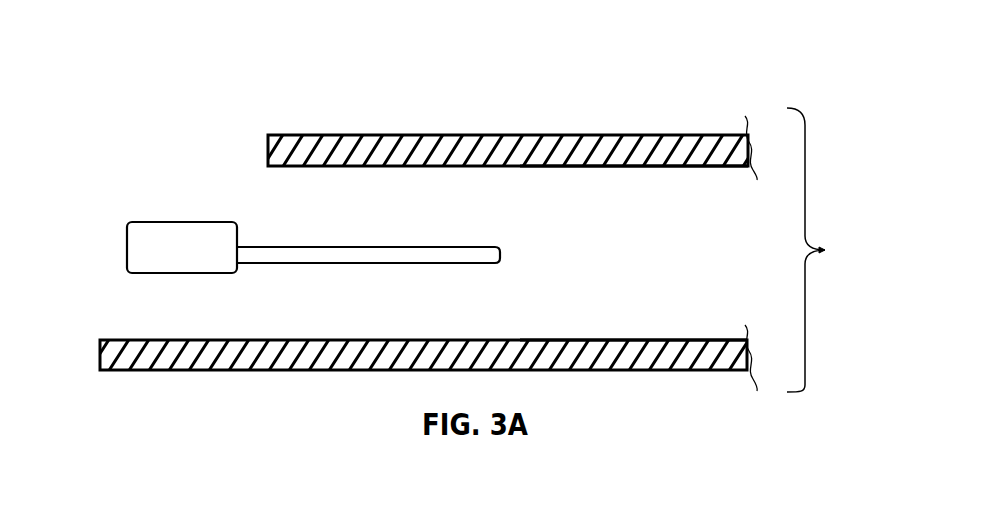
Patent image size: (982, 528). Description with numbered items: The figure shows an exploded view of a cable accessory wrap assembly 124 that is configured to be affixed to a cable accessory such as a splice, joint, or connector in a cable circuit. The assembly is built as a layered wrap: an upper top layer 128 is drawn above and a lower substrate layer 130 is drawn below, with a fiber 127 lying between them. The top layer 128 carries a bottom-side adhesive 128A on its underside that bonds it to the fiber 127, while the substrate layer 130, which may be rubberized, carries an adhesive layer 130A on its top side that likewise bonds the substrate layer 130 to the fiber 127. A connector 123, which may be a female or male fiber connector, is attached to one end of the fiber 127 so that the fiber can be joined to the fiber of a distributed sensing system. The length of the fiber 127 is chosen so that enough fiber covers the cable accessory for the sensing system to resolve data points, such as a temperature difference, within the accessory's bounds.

The connector 123 is at (163, 247).
The fiber 127 is at (282, 252).
The top layer 128 is at (318, 147).
The bottom-side adhesive 128A is at (720, 162).
The substrate layer 130 is at (277, 353).
The adhesive layer 130A is at (662, 343).
The cable accessory wrap assembly 124 is at (831, 250).